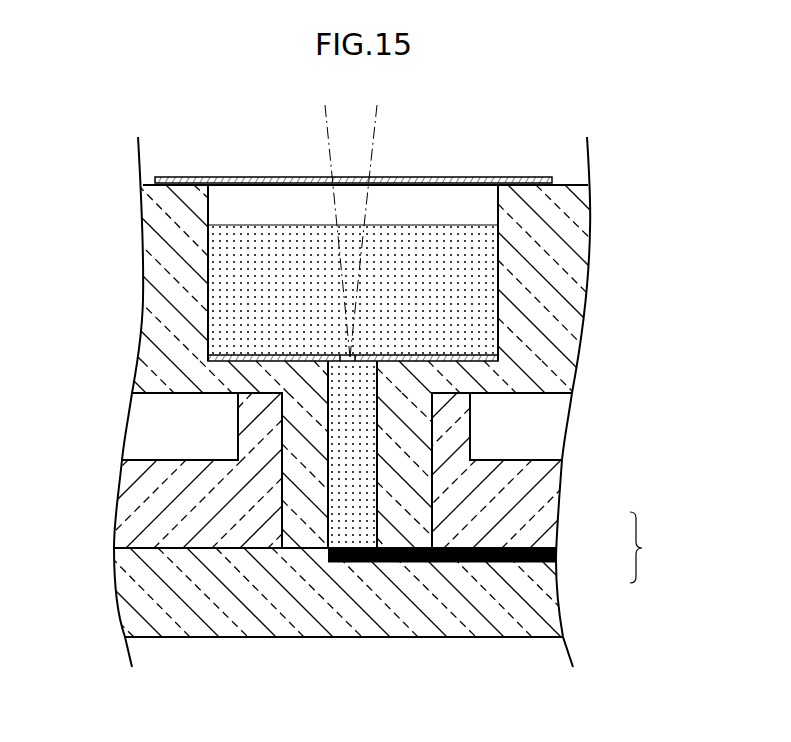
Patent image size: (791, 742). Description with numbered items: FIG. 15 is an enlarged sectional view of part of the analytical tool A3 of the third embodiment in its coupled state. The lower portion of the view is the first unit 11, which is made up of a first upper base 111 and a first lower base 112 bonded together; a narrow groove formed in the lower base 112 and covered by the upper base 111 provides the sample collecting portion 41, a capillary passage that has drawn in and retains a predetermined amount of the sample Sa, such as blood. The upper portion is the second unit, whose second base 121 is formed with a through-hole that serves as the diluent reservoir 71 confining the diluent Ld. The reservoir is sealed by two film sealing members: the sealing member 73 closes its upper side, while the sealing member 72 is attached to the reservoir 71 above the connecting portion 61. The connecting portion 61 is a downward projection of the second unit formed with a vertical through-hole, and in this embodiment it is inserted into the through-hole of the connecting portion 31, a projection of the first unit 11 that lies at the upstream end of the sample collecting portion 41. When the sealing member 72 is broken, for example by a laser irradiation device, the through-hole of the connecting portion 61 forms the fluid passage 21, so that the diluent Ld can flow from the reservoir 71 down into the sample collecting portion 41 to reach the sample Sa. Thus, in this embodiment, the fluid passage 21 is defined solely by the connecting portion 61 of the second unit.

The analytical tool A3 is at (128, 100).
The second base 121 is at (543, 273).
The diluent Ld is at (400, 265).
The diluent reservoir 71 is at (497, 267).
The sealing member 73 is at (272, 178).
The sealing member 72 is at (207, 357).
The connecting portion 61 is at (410, 422).
The connecting portion 31 is at (455, 442).
The fluid passage 21 is at (333, 505).
The first upper base 111 is at (532, 523).
The first lower base 112 is at (535, 582).
The first unit 11 is at (655, 547).
The sample collecting portion 41 is at (448, 565).
The sample Sa is at (405, 565).